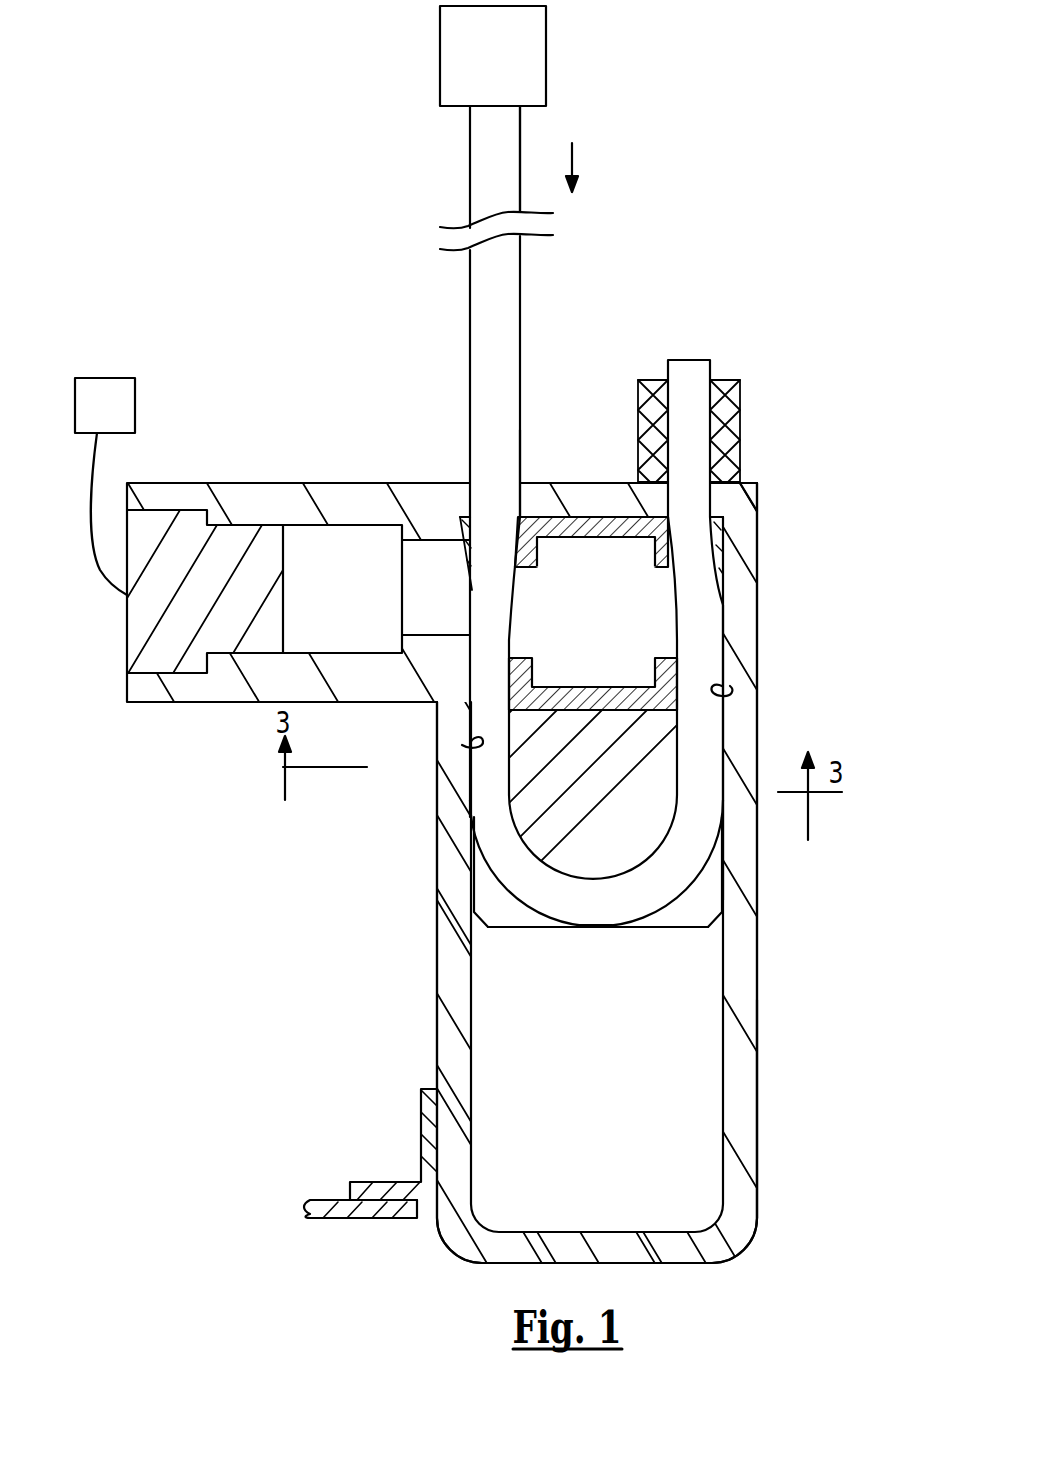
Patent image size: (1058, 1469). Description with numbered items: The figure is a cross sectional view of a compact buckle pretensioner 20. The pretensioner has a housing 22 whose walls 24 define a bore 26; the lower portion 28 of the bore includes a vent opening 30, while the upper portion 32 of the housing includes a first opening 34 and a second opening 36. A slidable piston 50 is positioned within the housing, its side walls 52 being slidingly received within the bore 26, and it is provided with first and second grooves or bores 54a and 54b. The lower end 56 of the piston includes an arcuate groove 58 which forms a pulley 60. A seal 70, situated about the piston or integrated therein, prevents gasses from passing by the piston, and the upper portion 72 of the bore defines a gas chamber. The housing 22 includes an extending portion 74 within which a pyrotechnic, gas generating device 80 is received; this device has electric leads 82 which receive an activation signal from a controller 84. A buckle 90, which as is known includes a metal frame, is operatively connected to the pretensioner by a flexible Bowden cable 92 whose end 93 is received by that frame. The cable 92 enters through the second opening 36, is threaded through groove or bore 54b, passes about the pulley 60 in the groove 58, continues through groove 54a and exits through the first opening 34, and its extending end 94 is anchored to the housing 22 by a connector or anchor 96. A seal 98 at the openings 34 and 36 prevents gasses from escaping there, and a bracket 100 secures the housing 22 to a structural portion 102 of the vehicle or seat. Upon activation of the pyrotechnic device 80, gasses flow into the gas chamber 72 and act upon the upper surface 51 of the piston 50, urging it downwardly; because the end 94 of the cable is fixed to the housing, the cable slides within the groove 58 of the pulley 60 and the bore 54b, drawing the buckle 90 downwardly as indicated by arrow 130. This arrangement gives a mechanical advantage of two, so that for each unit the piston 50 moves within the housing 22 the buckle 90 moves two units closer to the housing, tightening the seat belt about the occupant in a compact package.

The compact buckle pretensioner 20 is at (832, 543).
The housing 22 is at (737, 622).
The walls 24 is at (748, 713).
The bore 26 is at (730, 963).
The lower portion 28 is at (745, 1137).
The vent opening 30 is at (642, 1241).
The upper portion 32 is at (712, 486).
The first opening 34 is at (743, 482).
The second opening 36 is at (520, 482).
The piston 50 is at (533, 945).
The upper surface 51 is at (604, 704).
The side walls 52 is at (487, 868).
The first groove or bore 54a is at (722, 686).
The second groove or bore 54b is at (462, 745).
The lower end 56 is at (686, 920).
The arcuate groove 58 is at (632, 926).
The pulley 60 is at (587, 928).
The seal 70 is at (530, 672).
The gas chamber 72 is at (580, 624).
The extending portion 74 is at (345, 483).
The pyrotechnic gas generating device 80 is at (187, 633).
The electric leads 82 is at (97, 466).
The controller 84 is at (120, 396).
The buckle 90 is at (445, 85).
The Bowden cable 92 is at (470, 162).
The end 93 is at (512, 127).
The extending end 94 is at (690, 377).
The connector or anchor 96 is at (634, 407).
The seal 98 is at (580, 538).
The bracket 100 is at (420, 1108).
The structural portion of the vehicle or seat 102 is at (335, 1216).
The arrow 130 is at (583, 160).